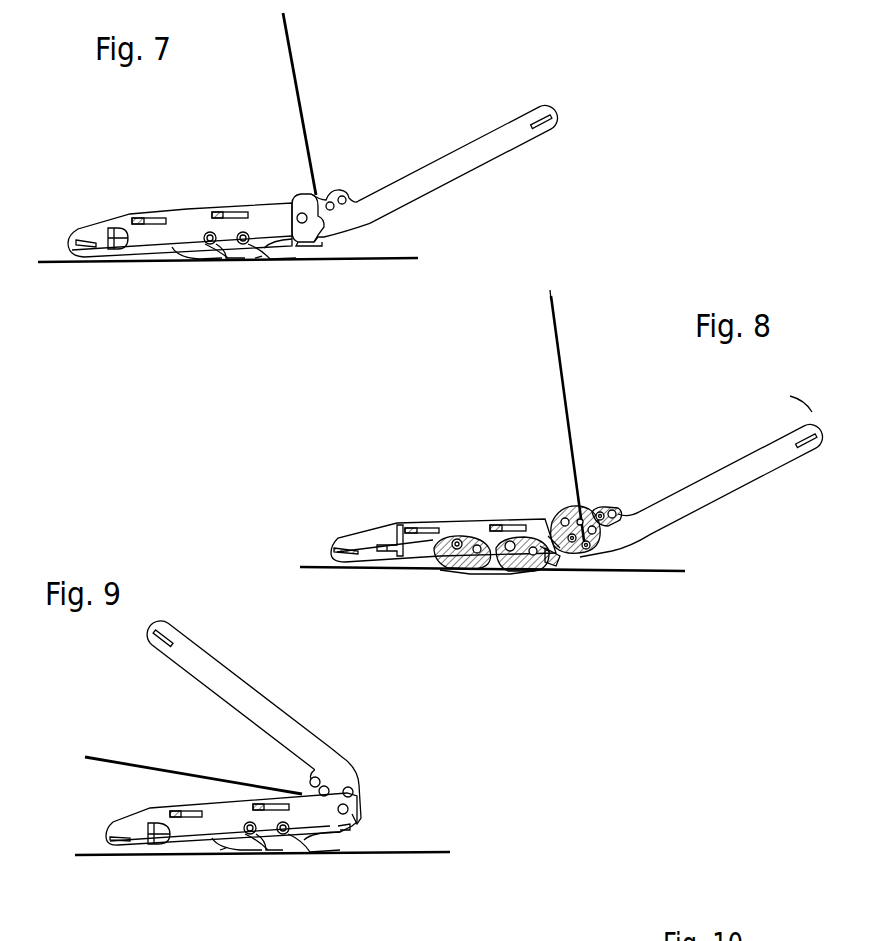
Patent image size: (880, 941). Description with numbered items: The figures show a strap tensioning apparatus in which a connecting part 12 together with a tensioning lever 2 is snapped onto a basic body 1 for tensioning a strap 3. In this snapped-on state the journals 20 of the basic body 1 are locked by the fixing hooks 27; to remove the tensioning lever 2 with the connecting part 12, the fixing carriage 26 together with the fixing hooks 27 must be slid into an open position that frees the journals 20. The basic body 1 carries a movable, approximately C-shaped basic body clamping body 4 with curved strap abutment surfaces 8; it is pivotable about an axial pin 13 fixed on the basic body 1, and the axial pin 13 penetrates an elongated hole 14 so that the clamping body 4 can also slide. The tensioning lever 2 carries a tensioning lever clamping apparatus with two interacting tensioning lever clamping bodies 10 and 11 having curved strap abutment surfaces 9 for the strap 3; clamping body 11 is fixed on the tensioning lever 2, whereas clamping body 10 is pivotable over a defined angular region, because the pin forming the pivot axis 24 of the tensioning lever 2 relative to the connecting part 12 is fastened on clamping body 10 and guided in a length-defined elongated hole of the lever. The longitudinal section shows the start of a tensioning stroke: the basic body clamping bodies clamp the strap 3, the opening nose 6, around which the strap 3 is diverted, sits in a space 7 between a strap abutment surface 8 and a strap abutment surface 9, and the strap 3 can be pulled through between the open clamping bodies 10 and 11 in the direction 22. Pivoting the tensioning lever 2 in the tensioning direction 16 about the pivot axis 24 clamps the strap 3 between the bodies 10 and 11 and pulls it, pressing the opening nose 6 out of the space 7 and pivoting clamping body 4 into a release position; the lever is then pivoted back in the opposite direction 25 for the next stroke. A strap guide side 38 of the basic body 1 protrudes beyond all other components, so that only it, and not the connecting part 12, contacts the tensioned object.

In FIG. 7, the basic body 1 is at (220, 255).
In FIG. 8, the basic body 1 is at (488, 563).
In FIG. 7, the tensioning lever 2 is at (464, 158).
In FIG. 8, the tensioning lever 2 is at (686, 497).
In FIG. 9, the tensioning lever 2 is at (262, 702).
In FIG. 7, the strap 3 is at (52, 258).
In FIG. 8, the strap 3 is at (565, 368).
In FIG. 9, the strap 3 is at (134, 766).
In FIG. 7, the basic body clamping body 4 is at (176, 251).
In FIG. 8, the basic body clamping body 4 is at (527, 574).
In FIG. 9, the basic body clamping body 4 is at (314, 853).
In FIG. 8, the opening nose 6 is at (540, 536).
In FIG. 8, the space 7 is at (546, 536).
In FIG. 8, the strap abutment surfaces 8 is at (538, 556).
In FIG. 8, the strap abutment surfaces 9 is at (588, 515).
In FIG. 8, the tensioning lever clamping body 10 is at (570, 538).
In FIG. 8, the tensioning lever clamping body 11 is at (604, 524).
In FIG. 7, the connecting part 12 is at (185, 215).
In FIG. 8, the connecting part 12 is at (343, 535).
In FIG. 9, the connecting part 12 is at (231, 811).
In FIG. 8, the axial pin 13 is at (507, 558).
In FIG. 8, the elongated hole 14 is at (518, 556).
In FIG. 8, the tensioning direction 16 is at (770, 381).
In FIG. 9, the tensioning direction 16 is at (192, 660).
In FIG. 7, the journals 20 is at (209, 246).
In FIG. 9, the journals 20 is at (249, 836).
In FIG. 8, the direction 22 is at (559, 306).
In FIG. 7, the pivot axis 24 is at (301, 213).
In FIG. 9, the opposite direction 25 is at (192, 660).
In FIG. 8, the fixing carriage 26 is at (460, 530).
In FIG. 9, the fixing hooks 27 is at (272, 840).
In FIG. 7, the strap guide side 38 is at (259, 264).
In FIG. 9, the strap guide side 38 is at (226, 856).